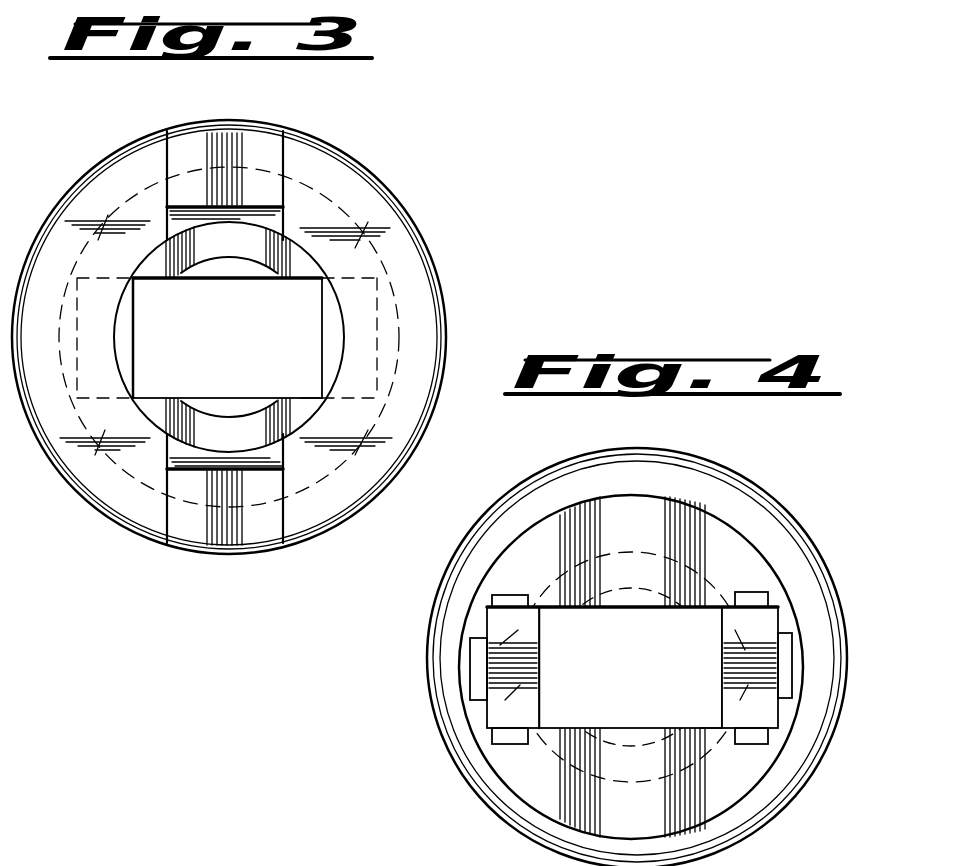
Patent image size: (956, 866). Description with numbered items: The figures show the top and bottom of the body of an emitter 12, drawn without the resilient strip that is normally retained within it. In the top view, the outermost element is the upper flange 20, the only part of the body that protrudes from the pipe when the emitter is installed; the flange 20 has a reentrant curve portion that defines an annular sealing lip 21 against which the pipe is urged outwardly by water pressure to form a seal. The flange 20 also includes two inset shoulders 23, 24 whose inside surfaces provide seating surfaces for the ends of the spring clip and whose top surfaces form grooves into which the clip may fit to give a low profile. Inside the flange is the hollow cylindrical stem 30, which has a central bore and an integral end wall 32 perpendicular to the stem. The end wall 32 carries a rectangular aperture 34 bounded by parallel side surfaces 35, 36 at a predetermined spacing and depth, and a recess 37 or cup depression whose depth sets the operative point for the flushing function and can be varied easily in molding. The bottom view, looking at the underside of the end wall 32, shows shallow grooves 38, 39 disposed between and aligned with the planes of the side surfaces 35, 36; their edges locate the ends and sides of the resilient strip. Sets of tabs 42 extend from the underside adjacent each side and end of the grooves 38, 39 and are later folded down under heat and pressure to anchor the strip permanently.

In FIG. 3, the emitter 12 is at (420, 240).
In FIG. 4, the emitter 12 is at (829, 568).
In FIG. 3, the upper flange 20 is at (422, 298).
In FIG. 4, the annular sealing lip 21 is at (428, 697).
In FIG. 3, the inset shoulder 23 is at (167, 217).
In FIG. 3, the inset shoulder 24 is at (168, 461).
In FIG. 3, the hollow cylindrical stem 30 is at (290, 246).
In FIG. 3, the end wall 32 is at (241, 244).
In FIG. 4, the end wall 32 is at (645, 513).
In FIG. 3, the rectangular aperture 34 is at (158, 320).
In FIG. 4, the rectangular aperture 34 is at (567, 643).
In FIG. 3, the side surface 35 is at (286, 410).
In FIG. 4, the side surface 35 is at (691, 603).
In FIG. 3, the side surface 36 is at (292, 264).
In FIG. 4, the side surface 36 is at (700, 735).
In FIG. 3, the recess 37 is at (236, 268).
In FIG. 4, the recess 37 is at (637, 598).
In FIG. 4, the shallow groove 38 is at (500, 626).
In FIG. 4, the shallow groove 39 is at (758, 622).
In FIG. 4, the tab 42 is at (503, 594).